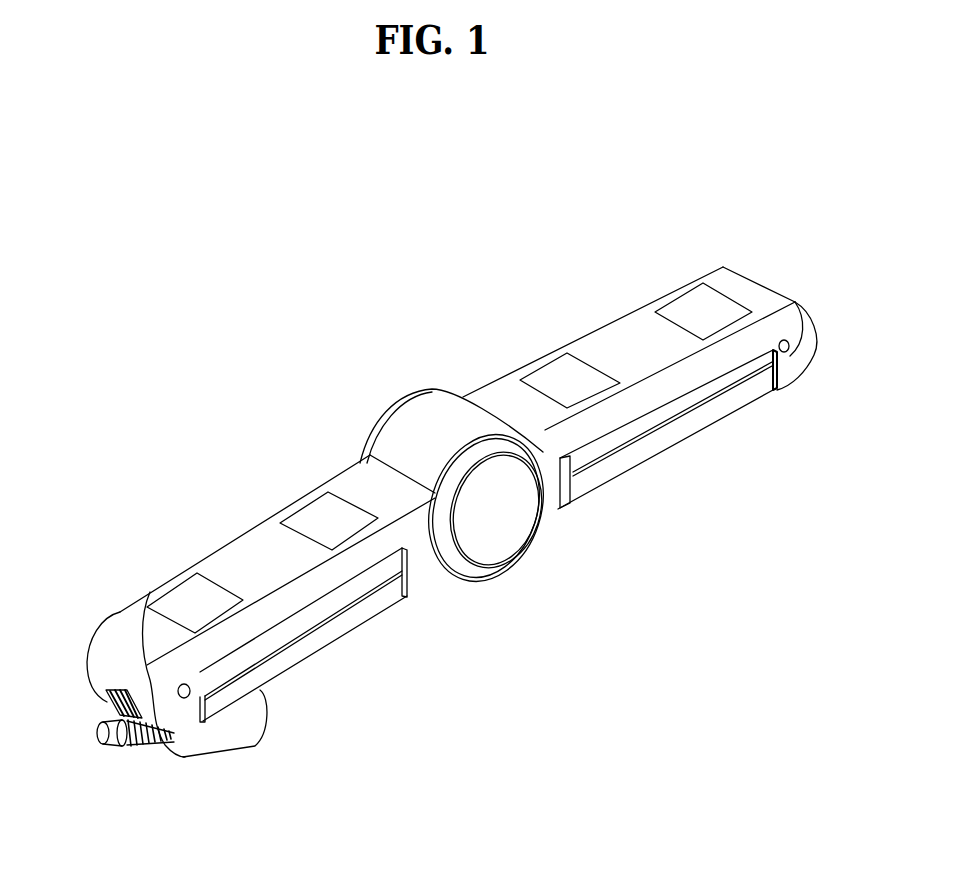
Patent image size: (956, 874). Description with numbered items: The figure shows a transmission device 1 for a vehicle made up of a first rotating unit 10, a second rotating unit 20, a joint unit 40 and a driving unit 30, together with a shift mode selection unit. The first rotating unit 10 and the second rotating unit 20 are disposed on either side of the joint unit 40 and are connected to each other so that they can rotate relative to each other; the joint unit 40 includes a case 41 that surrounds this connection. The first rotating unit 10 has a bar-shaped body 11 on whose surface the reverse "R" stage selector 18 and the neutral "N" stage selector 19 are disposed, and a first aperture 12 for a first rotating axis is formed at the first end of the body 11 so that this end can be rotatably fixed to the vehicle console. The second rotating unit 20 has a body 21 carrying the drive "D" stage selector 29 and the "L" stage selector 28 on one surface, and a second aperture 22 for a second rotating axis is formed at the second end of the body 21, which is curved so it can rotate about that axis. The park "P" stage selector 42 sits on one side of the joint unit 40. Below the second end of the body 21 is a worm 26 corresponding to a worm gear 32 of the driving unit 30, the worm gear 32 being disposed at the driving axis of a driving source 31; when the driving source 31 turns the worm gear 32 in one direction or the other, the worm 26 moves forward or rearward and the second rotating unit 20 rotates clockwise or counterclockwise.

The transmission device 1 is at (591, 218).
The first rotating unit 10 is at (703, 465).
The body 11 is at (618, 333).
The first aperture 12 is at (795, 302).
The reverse "R" stage selector 18 is at (693, 300).
The neutral "N" stage selector 19 is at (553, 362).
The second rotating unit 20 is at (372, 647).
The body 21 is at (243, 541).
The second aperture 22 is at (185, 686).
The worm 26 is at (122, 691).
The "L" stage selector 28 is at (183, 590).
The drive "D" stage selector 29 is at (313, 505).
The driving unit 30 is at (213, 814).
The driving source 31 is at (217, 747).
The worm gear 32 is at (150, 750).
The joint unit 40 is at (508, 583).
The case 41 is at (423, 412).
The park "P" stage selector 42 is at (517, 527).